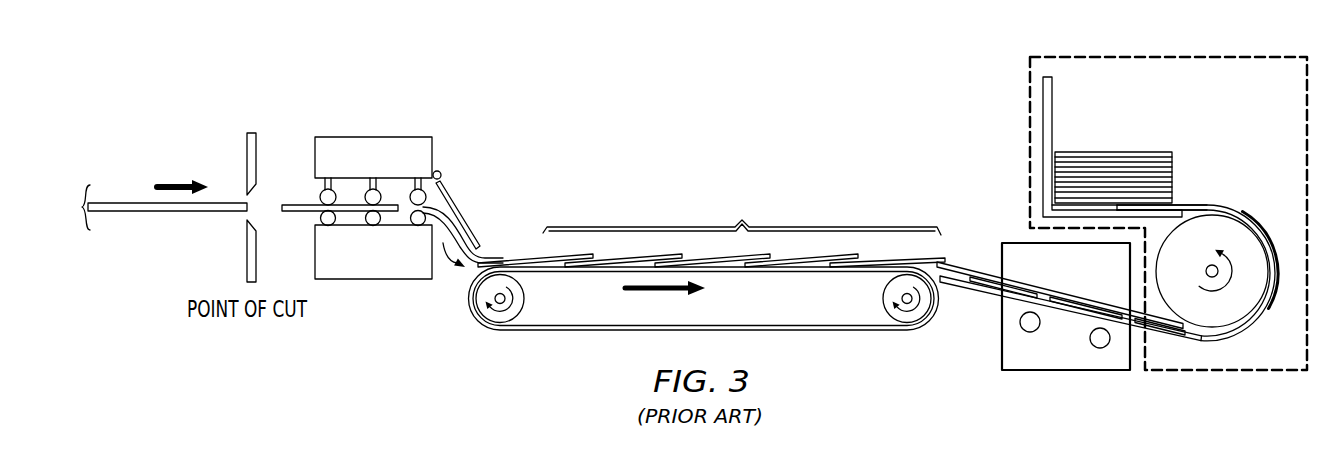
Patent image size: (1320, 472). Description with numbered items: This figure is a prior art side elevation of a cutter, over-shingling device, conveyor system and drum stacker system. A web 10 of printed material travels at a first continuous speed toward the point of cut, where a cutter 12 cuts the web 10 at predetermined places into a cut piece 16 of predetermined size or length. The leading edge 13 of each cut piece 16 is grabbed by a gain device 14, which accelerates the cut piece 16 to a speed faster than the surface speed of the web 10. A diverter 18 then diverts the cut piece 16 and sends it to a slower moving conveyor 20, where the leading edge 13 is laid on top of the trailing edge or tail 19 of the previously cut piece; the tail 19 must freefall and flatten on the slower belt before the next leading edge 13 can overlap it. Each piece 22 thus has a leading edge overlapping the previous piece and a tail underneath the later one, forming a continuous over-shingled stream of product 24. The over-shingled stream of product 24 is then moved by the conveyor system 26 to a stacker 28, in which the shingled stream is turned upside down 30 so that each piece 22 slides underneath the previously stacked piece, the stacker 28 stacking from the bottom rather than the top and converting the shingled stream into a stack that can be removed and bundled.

The web 10 is at (158, 212).
The cutter 12 is at (247, 148).
The leading edge 13 is at (500, 258).
The gain device 14 is at (352, 137).
The cut piece 16 is at (300, 212).
The diverter 18 is at (462, 204).
The tail 19 is at (498, 270).
The conveyor 20 is at (615, 333).
The piece 22 is at (1248, 323).
The over-shingled stream of product 24 is at (742, 213).
The conveyor system 26 is at (1065, 371).
The stacker 28 is at (1022, 141).
The turned upside down 30 is at (1239, 179).